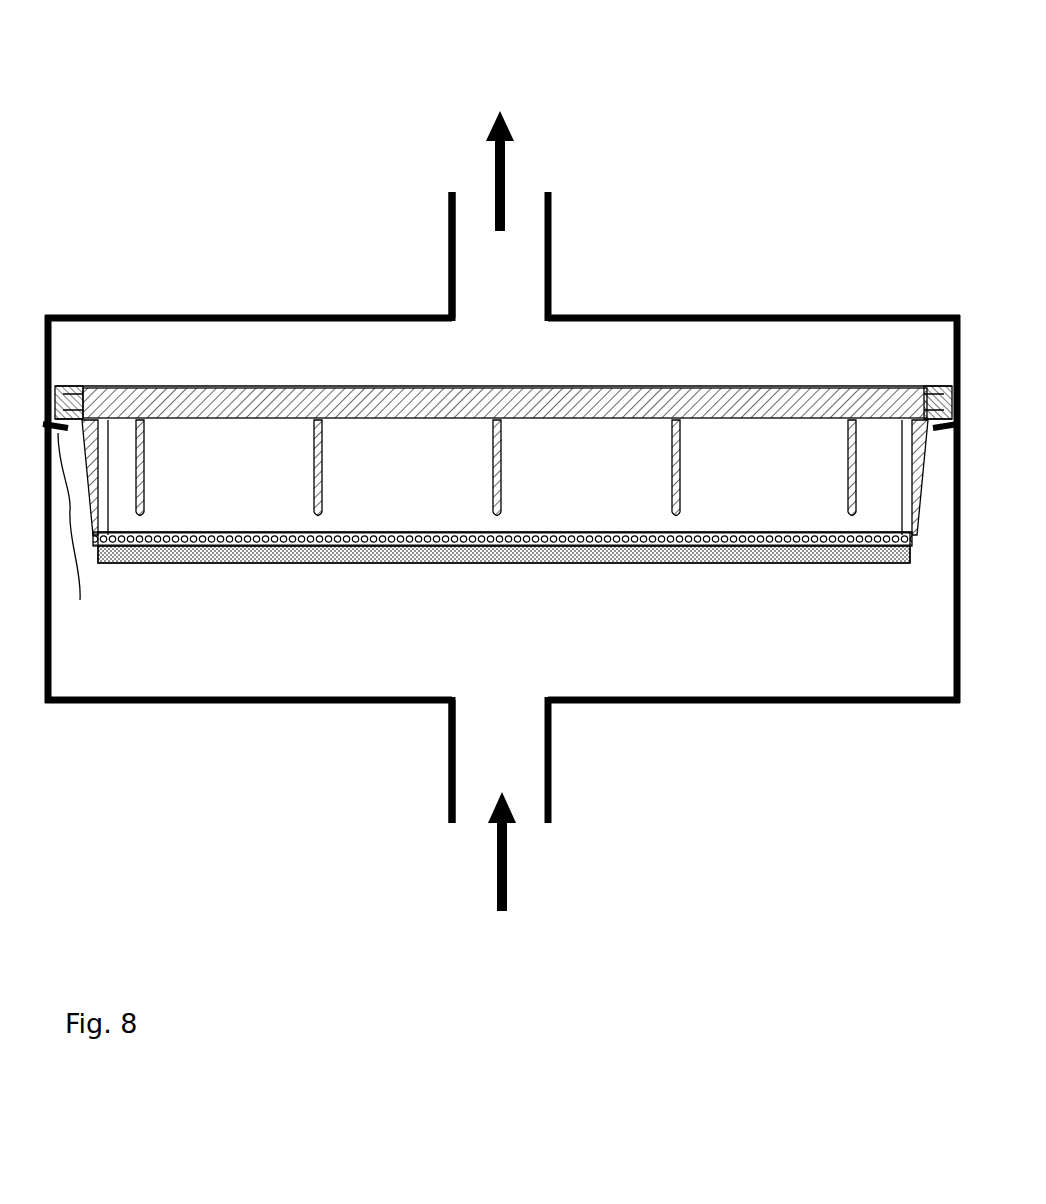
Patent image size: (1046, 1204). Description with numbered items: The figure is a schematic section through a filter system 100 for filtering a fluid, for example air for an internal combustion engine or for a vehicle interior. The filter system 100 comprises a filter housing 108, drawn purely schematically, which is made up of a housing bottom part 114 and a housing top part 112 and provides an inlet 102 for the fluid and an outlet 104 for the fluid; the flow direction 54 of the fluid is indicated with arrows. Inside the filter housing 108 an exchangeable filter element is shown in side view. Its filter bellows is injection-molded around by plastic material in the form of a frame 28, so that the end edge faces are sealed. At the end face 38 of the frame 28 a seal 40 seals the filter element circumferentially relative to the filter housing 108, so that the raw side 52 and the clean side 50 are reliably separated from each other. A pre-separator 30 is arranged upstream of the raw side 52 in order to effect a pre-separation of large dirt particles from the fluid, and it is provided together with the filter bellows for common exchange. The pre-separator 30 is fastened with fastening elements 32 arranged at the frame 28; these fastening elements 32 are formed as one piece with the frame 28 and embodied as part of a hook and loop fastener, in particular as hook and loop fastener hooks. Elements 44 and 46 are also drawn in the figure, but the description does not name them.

The filter system 100 is at (187, 110).
The end face 38 is at (84, 372).
The outlet 104 is at (447, 198).
The inlet 102 is at (452, 767).
The flow direction 54 is at (505, 163).
The filter housing 108 is at (502, 505).
The housing top part 112 is at (780, 312).
The housing bottom part 114 is at (762, 704).
The clean side 50 is at (290, 388).
The frame 28 is at (610, 460).
The spacer posts 44 is at (676, 514).
The gap 46 is at (573, 510).
The raw side 52 is at (210, 533).
The fastening elements 32 is at (362, 546).
The pre-separator 30 is at (437, 556).
The seal 40 is at (79, 533).